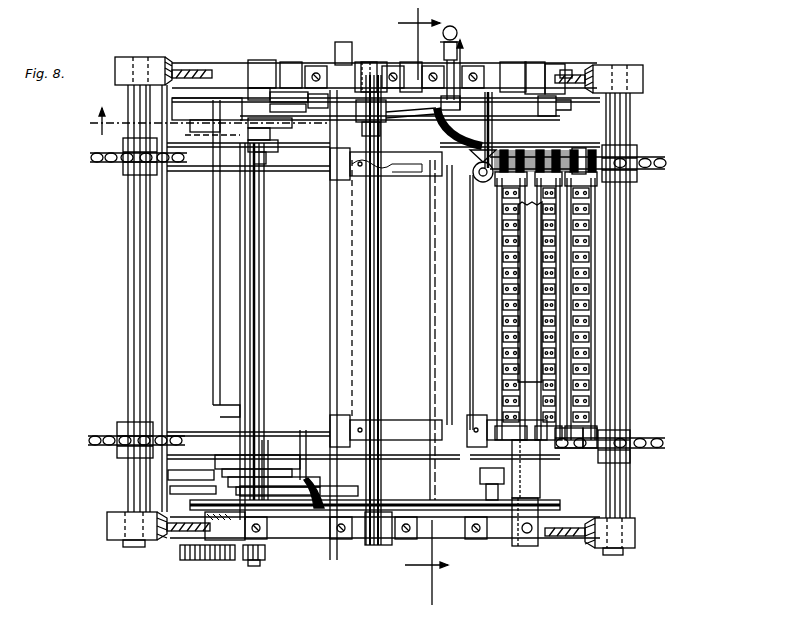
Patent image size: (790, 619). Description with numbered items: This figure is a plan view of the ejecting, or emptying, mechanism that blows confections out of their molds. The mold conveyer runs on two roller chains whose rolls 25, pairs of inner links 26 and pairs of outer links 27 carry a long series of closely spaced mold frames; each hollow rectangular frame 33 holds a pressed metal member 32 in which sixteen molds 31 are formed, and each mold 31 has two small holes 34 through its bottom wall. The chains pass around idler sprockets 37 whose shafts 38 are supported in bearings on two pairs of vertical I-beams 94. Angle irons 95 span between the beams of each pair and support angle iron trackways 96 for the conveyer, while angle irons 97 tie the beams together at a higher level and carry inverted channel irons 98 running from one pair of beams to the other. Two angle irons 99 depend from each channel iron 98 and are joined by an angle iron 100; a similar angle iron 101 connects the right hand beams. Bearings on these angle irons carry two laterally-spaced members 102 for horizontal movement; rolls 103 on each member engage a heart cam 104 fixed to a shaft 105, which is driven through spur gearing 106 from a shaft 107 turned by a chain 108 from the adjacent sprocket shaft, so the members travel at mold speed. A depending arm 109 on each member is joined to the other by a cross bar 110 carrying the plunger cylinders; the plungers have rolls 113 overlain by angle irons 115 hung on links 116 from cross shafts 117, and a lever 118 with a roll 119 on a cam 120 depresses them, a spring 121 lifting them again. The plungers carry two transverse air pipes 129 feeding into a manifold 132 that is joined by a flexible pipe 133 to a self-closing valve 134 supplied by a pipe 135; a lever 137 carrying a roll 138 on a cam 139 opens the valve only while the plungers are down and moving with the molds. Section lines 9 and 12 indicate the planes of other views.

The section line 9- 9 is at (418, 304).
The section line 12- 12 is at (281, 88).
The rolls 25 is at (586, 142).
The inner links 26 is at (558, 456).
The outer links 27 is at (582, 456).
The molds 31 is at (596, 308).
The pressed metal member 32 is at (470, 331).
The hollow rectangular frame 33 is at (596, 282).
The holes 34 is at (582, 361).
The idler sprockets 37 is at (90, 162).
The shafts 38 is at (132, 303).
The vertical I-beams 94 is at (188, 70).
The angle irons 95 is at (168, 106).
The angle iron trackways 96 is at (196, 172).
The angle irons 97 is at (212, 284).
The inverted channel irons 98 is at (321, 64).
The angle irons 99 is at (366, 62).
The angle iron 100 is at (330, 329).
The angle iron 101 is at (528, 466).
The members 102 is at (347, 64).
The rolls 103 is at (308, 508).
The heart cam 104 is at (282, 65).
The shaft 105 is at (264, 256).
The spur gearing 106 is at (250, 562).
The shaft 107 is at (214, 562).
The chain 108 is at (228, 485).
The depending arm 109 is at (196, 506).
The cross bar 110 is at (430, 362).
The rolls 113 is at (534, 154).
The angle irons 115 is at (426, 188).
The links 116 is at (374, 187).
The cross shafts 117 is at (378, 312).
The lever 118 is at (302, 432).
The roll 119 is at (216, 460).
The cam 120 is at (280, 432).
The spring 121 is at (330, 540).
The pipes 129 is at (461, 254).
The manifold 132 is at (492, 159).
The flexible pipe 133 is at (390, 178).
The valve 134 is at (388, 120).
The pipe 135 is at (434, 34).
The lever 137 is at (314, 120).
The roll 138 is at (248, 136).
The cam 139 is at (272, 152).